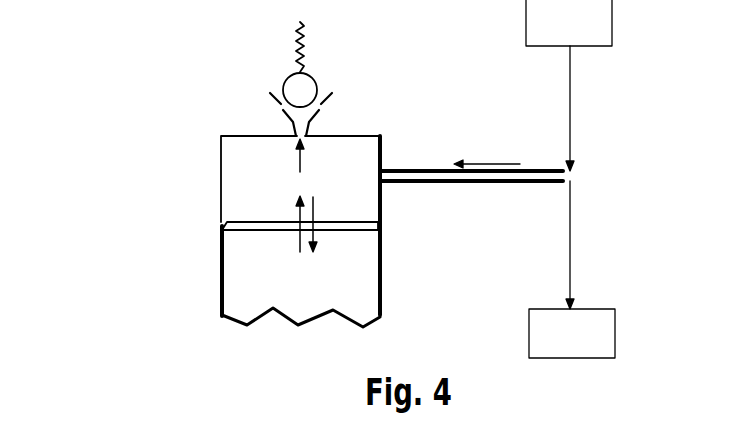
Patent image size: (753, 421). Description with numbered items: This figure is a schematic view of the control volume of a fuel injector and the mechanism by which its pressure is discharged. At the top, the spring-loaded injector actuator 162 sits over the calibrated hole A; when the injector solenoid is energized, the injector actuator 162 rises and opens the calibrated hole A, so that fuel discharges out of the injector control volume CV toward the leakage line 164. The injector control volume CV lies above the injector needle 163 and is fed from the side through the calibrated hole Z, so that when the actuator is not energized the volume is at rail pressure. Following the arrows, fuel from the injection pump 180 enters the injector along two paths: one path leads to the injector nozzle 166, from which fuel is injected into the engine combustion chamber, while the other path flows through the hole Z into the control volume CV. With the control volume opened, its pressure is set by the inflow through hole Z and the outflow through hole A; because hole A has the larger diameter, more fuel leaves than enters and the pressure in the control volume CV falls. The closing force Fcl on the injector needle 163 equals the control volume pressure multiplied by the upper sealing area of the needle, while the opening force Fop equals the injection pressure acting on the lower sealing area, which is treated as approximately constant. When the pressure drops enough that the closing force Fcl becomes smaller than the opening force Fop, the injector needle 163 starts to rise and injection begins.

The injector actuator 162 is at (320, 72).
The injector needle 163 is at (335, 285).
The leakage line 164 is at (253, 88).
The injector nozzle 166 is at (572, 269).
The injection pump 180 is at (569, 85).
The injector control volume CV is at (245, 182).
The calibrated hole A is at (298, 137).
The calibrated hole Z is at (383, 170).
The closing force Fcl is at (318, 208).
The opening force Fop is at (295, 236).